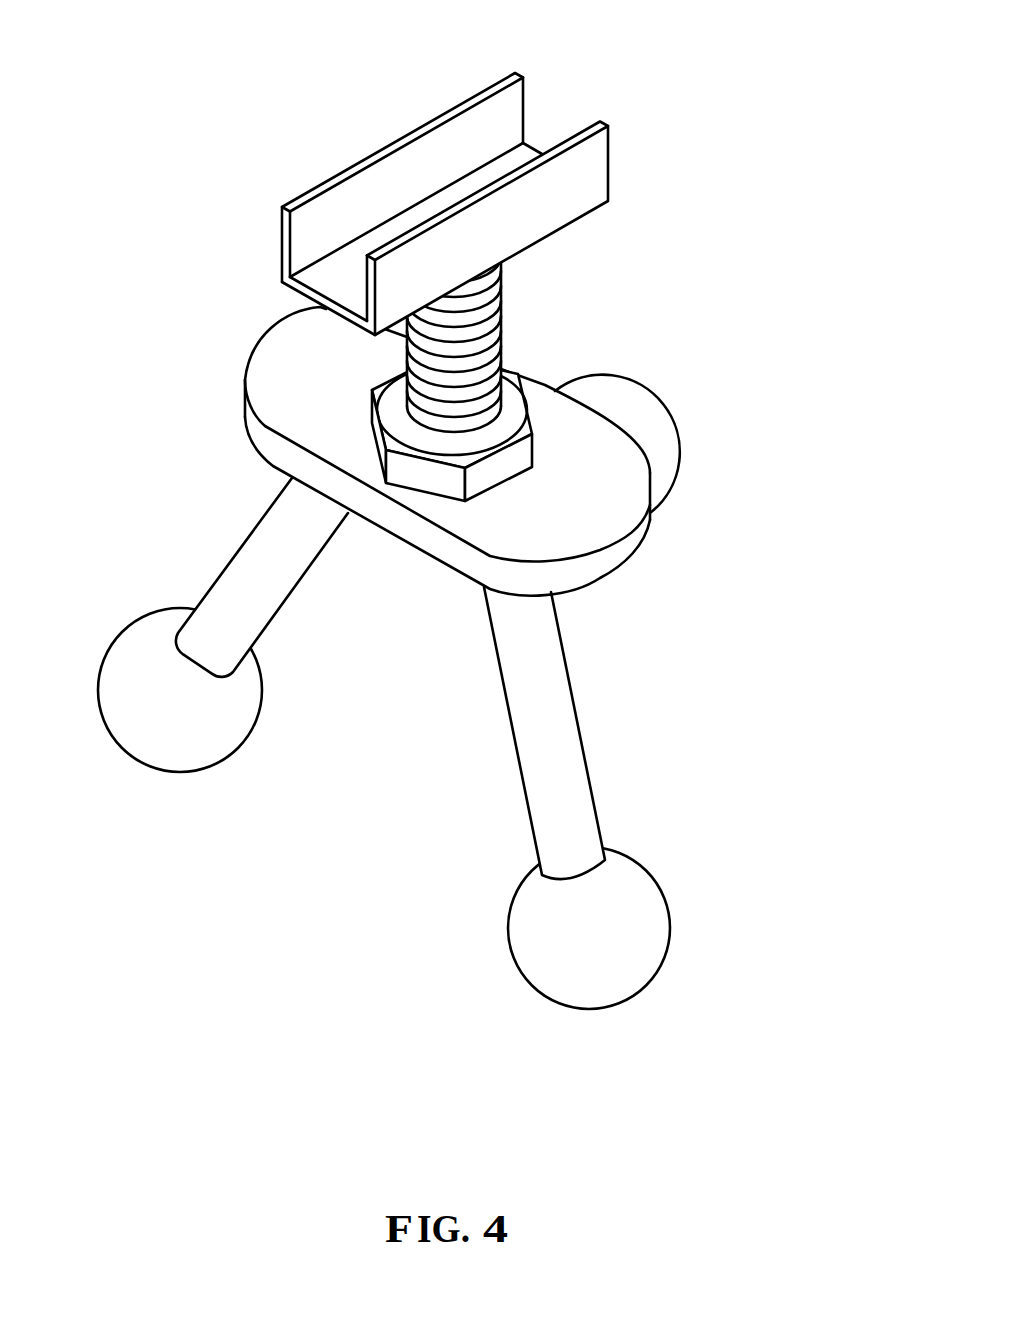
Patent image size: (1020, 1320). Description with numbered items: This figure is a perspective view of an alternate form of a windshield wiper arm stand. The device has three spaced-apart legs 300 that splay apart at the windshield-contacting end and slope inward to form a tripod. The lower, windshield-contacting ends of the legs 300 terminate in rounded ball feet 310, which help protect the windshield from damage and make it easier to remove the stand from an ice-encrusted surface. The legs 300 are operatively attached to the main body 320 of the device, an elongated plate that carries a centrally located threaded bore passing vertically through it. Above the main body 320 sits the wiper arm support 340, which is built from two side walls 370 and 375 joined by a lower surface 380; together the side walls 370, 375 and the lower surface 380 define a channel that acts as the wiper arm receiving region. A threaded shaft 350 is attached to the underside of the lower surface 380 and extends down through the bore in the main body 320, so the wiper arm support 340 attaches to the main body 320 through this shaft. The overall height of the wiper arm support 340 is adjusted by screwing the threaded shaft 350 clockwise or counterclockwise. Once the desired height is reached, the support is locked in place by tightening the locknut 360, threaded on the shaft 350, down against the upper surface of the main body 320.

The legs 300 is at (272, 557).
The ball feet 310 is at (632, 410).
The main body 320 is at (253, 347).
The wiper arm support 340 is at (452, 168).
The threaded shaft 350 is at (483, 317).
The locknut 360 is at (498, 467).
The side wall 370 is at (487, 122).
The side wall 375 is at (587, 178).
The lower surface 380 is at (347, 278).